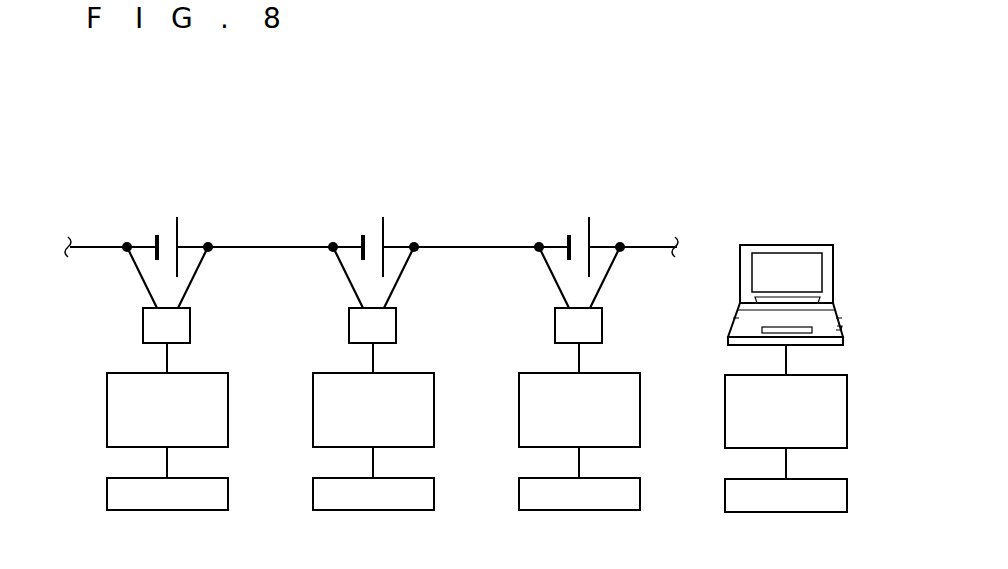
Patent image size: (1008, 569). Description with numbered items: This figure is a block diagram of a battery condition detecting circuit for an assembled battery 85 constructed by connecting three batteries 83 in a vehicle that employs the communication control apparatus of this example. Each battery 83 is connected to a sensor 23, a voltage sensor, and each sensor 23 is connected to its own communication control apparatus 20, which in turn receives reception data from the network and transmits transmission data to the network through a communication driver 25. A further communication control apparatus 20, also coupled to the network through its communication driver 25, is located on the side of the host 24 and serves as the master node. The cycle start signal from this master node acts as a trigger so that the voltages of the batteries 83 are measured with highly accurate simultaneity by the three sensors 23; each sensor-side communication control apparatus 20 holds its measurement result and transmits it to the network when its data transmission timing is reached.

The battery 83 is at (166, 234).
The assembled battery 85 is at (598, 234).
The sensor 23 is at (190, 326).
The communication control apparatus 20 is at (187, 373).
The communication driver 25 is at (187, 478).
The host 24 is at (833, 275).